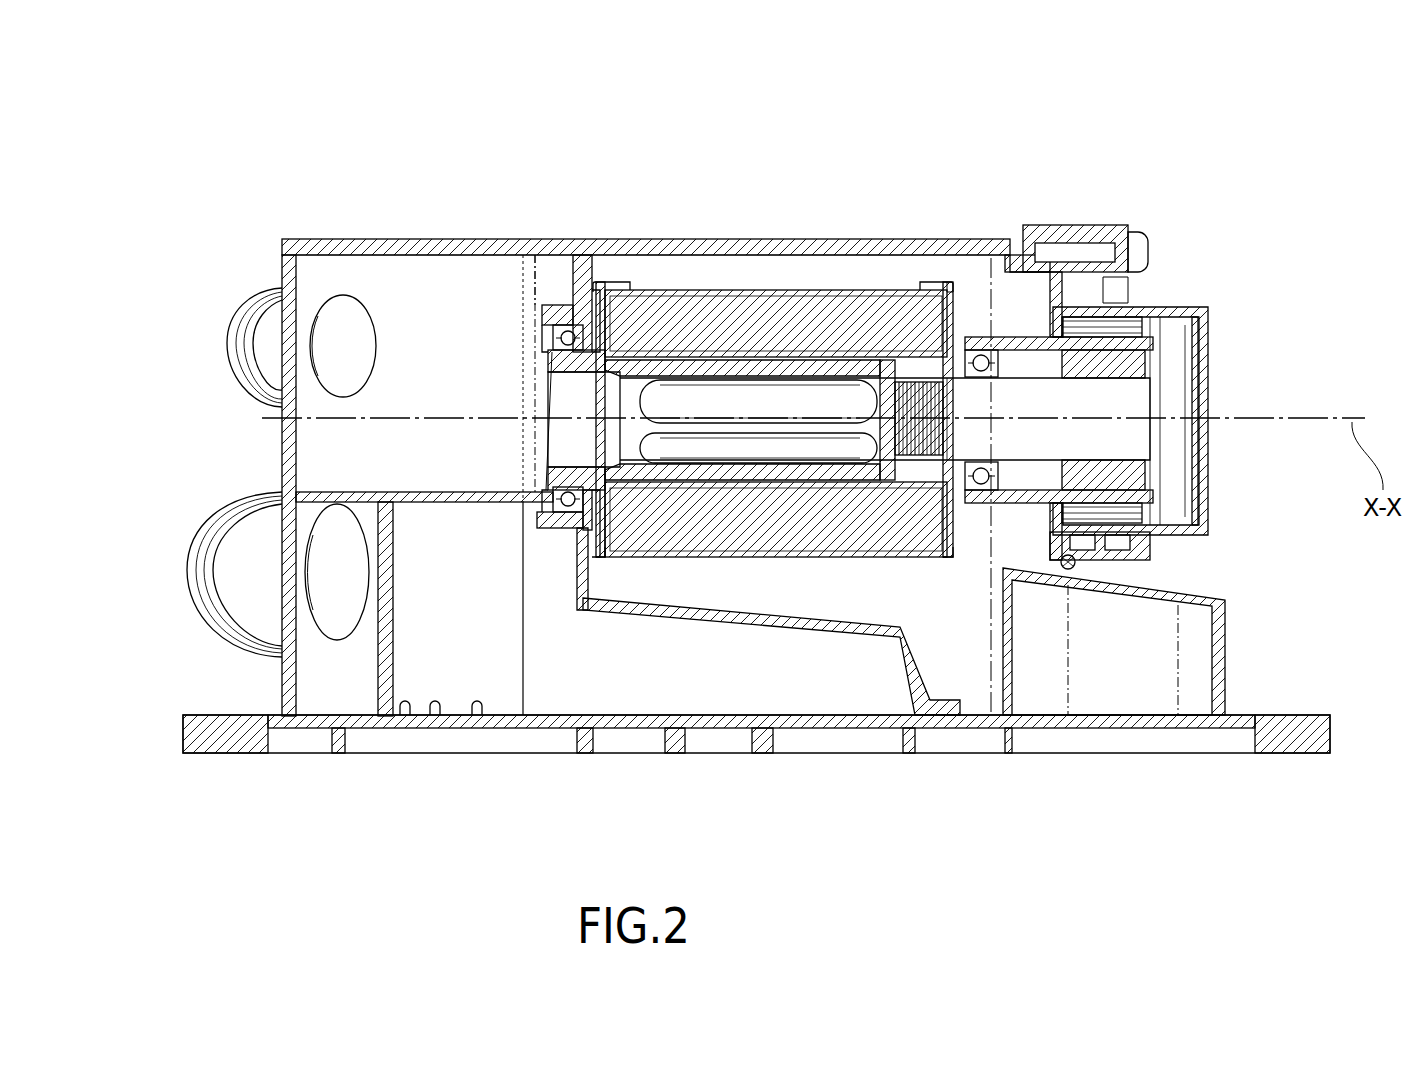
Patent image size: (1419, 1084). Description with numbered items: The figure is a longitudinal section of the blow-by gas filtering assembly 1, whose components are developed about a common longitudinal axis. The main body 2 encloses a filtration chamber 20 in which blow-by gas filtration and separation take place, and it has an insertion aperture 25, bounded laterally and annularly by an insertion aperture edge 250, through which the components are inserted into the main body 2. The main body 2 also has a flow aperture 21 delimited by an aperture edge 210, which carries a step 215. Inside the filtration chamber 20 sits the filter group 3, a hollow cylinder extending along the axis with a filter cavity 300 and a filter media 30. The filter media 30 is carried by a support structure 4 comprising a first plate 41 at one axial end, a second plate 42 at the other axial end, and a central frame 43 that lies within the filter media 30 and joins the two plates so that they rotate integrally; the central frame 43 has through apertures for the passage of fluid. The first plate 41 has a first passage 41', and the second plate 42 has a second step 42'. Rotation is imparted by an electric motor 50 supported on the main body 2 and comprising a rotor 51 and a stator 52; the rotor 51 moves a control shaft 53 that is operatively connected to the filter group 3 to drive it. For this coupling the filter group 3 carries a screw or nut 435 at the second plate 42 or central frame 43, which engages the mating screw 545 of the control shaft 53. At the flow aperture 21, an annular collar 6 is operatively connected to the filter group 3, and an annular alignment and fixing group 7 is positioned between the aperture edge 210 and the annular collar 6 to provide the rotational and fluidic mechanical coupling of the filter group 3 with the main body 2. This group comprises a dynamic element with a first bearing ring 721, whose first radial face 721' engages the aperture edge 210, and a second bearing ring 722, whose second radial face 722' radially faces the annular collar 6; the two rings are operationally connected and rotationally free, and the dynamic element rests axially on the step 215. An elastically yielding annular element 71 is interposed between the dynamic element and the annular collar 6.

The blow-by gas filtering assembly 1 is at (156, 171).
The main body 2 is at (385, 232).
The filter group 3 is at (798, 280).
The support structure 4 is at (967, 288).
The annular collar 6 is at (542, 365).
The annular alignment and fixing group 7 is at (592, 333).
The filtration chamber 20 is at (832, 273).
The flow aperture 21 is at (565, 305).
The insertion aperture 25 is at (1040, 555).
The filter media 30 is at (647, 320).
The first plate 41 is at (613, 278).
The first passage 41' is at (365, 421).
The second plate 42 is at (994, 288).
The second step 42' is at (1116, 328).
The central frame 43 is at (697, 376).
The electric motor 50 is at (1122, 303).
The rotor 51 is at (1127, 365).
The stator 52 is at (1132, 330).
The control shaft 53 is at (1130, 439).
The elastically yielding annular element 71 is at (556, 488).
The aperture edge 210 is at (557, 507).
The step 215 is at (546, 332).
The insertion aperture edge 250 is at (1052, 562).
The filter cavity 300 is at (823, 393).
The screw or nut 435 is at (930, 556).
The bracket 545 is at (930, 556).
The first bearing ring 721 is at (521, 667).
The first radial face 721' is at (621, 661).
The second bearing ring 722 is at (452, 579).
The second radial face 722' is at (670, 664).